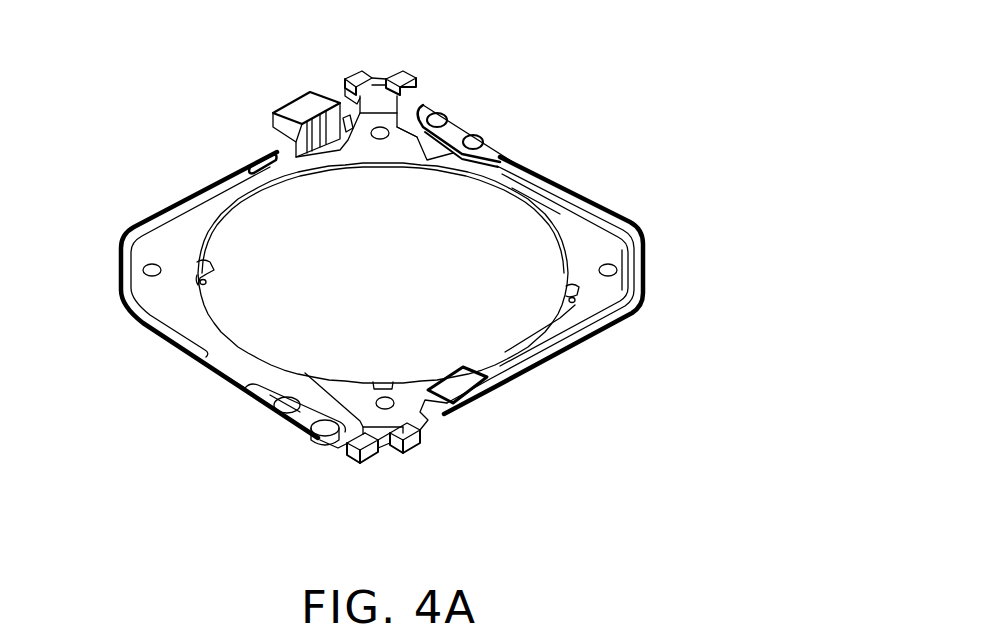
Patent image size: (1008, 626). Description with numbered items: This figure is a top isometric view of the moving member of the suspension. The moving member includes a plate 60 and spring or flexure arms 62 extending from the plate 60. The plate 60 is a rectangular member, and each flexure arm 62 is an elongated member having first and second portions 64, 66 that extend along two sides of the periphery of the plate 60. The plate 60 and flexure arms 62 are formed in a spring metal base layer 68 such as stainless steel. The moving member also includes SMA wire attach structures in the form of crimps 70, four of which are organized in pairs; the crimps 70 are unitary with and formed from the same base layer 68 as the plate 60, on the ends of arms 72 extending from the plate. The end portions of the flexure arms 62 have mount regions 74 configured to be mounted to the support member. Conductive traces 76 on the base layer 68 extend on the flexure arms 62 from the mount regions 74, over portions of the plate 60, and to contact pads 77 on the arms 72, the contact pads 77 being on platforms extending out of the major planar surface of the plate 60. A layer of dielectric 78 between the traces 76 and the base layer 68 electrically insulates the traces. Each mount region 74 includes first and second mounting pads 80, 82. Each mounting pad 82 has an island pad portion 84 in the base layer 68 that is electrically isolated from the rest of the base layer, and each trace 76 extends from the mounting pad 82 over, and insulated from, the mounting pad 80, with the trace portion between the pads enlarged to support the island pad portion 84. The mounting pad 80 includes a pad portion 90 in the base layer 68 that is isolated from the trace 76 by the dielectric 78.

The plate 60 is at (593, 242).
The flexure arms 62 is at (163, 349).
The first portion 64 is at (558, 183).
The second portion 66 is at (615, 320).
The spring metal base layer 68 is at (190, 264).
The crimps 70 is at (398, 75).
The arms 72 is at (380, 117).
The mount regions 74 is at (478, 116).
The conductive traces 76 is at (178, 205).
The contact pads 77 is at (298, 103).
The dielectric 78 is at (123, 242).
The first mounting pad 80 is at (258, 412).
The second mounting pad 82 is at (320, 450).
The island pad portion 84 is at (339, 447).
The pad portion 90 is at (290, 398).